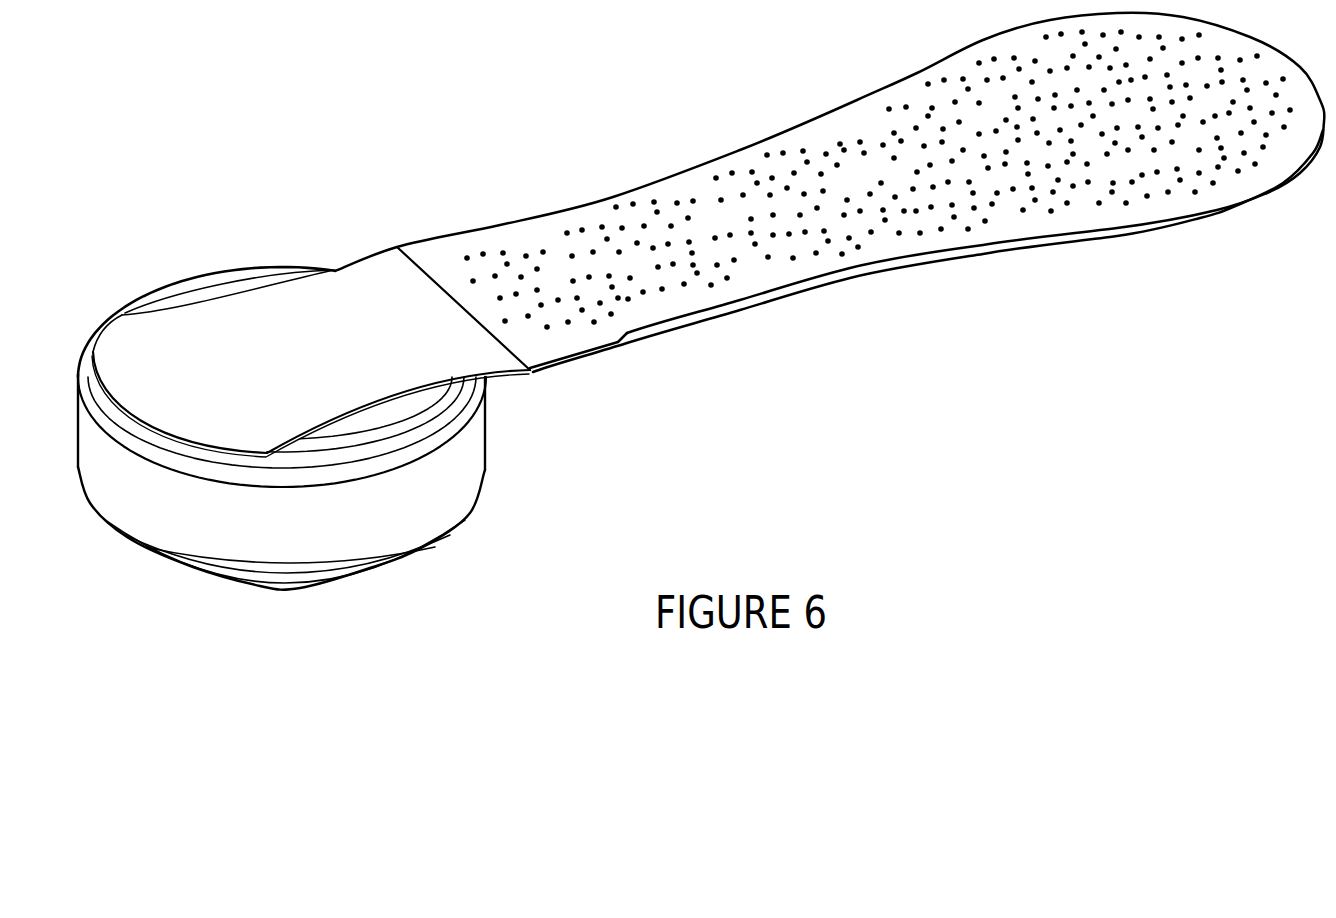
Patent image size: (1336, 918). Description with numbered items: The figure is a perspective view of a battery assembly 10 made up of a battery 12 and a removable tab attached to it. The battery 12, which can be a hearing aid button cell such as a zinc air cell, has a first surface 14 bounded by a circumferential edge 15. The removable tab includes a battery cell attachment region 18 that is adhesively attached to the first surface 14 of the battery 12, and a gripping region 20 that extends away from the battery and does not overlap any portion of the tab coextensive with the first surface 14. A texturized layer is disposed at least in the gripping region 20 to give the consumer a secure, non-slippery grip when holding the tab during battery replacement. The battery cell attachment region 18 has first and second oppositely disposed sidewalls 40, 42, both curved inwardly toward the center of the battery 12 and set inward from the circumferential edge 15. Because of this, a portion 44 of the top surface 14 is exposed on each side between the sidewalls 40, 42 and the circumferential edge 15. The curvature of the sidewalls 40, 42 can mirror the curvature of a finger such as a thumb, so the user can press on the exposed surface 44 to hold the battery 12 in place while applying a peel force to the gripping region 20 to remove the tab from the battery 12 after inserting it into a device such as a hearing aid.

The battery assembly 10 is at (615, 103).
The battery 12 is at (353, 548).
The first surface 14 is at (460, 393).
The circumferential edge 15 is at (457, 423).
The battery cell attachment region 18 is at (352, 282).
The gripping region 20 is at (928, 285).
The first sidewall 40 is at (243, 300).
The second sidewall 42 is at (343, 420).
The exposed portion of top surface 44 is at (190, 303).